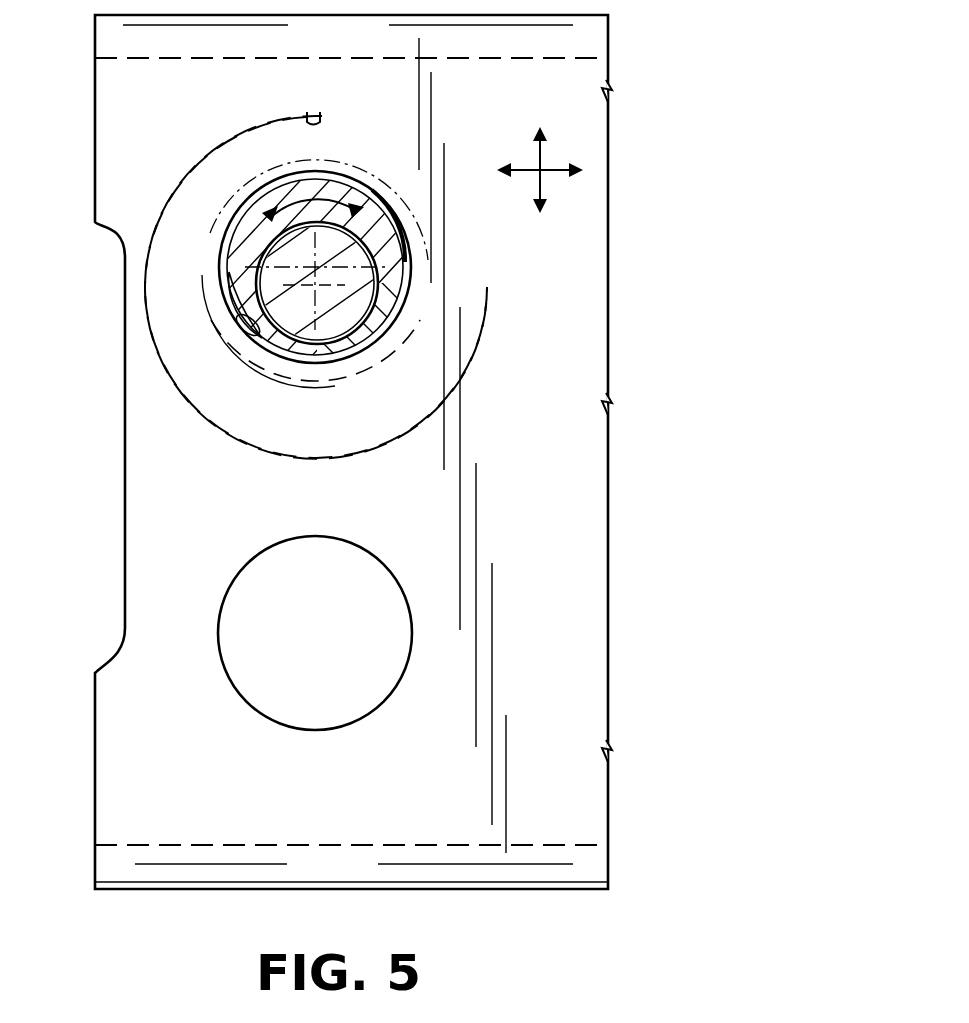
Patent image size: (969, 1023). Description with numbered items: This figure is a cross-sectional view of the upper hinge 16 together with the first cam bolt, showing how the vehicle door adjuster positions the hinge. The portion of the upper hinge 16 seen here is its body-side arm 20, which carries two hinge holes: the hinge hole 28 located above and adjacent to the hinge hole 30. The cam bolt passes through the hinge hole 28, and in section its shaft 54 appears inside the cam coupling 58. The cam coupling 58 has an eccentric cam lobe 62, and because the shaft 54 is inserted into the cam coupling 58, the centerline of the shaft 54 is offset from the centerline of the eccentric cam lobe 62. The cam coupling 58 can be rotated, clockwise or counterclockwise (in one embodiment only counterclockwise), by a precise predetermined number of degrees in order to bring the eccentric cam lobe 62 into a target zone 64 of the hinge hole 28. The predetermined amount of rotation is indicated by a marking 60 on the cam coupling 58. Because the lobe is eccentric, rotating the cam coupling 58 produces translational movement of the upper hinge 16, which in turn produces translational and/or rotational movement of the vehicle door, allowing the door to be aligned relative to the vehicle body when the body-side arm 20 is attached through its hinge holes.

The upper hinge 16 is at (146, 894).
The body-side arm 20 is at (122, 779).
The hinge hole 28 is at (263, 338).
The hinge hole 30 is at (322, 730).
The shaft 54 is at (340, 312).
The cam coupling 58 is at (487, 300).
The marking 60 is at (309, 112).
The eccentric cam lobe 62 is at (340, 182).
The target zone 64 is at (207, 301).